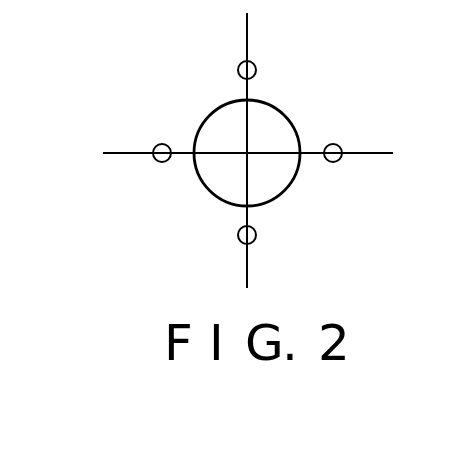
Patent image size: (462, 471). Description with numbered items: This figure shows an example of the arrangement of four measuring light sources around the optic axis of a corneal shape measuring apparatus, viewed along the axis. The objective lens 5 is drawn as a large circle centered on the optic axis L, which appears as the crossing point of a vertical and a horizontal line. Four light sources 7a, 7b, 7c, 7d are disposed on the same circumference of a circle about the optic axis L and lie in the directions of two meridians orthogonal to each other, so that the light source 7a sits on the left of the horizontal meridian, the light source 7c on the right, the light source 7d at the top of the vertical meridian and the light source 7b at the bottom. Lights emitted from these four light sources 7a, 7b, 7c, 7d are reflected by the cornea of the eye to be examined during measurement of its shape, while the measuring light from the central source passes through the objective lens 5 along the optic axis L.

The objective lens 5 is at (217, 185).
The optic axis L is at (247, 153).
The light source 7a is at (162, 162).
The light source 7b is at (256, 234).
The light source 7c is at (336, 145).
The light source 7d is at (255, 67).